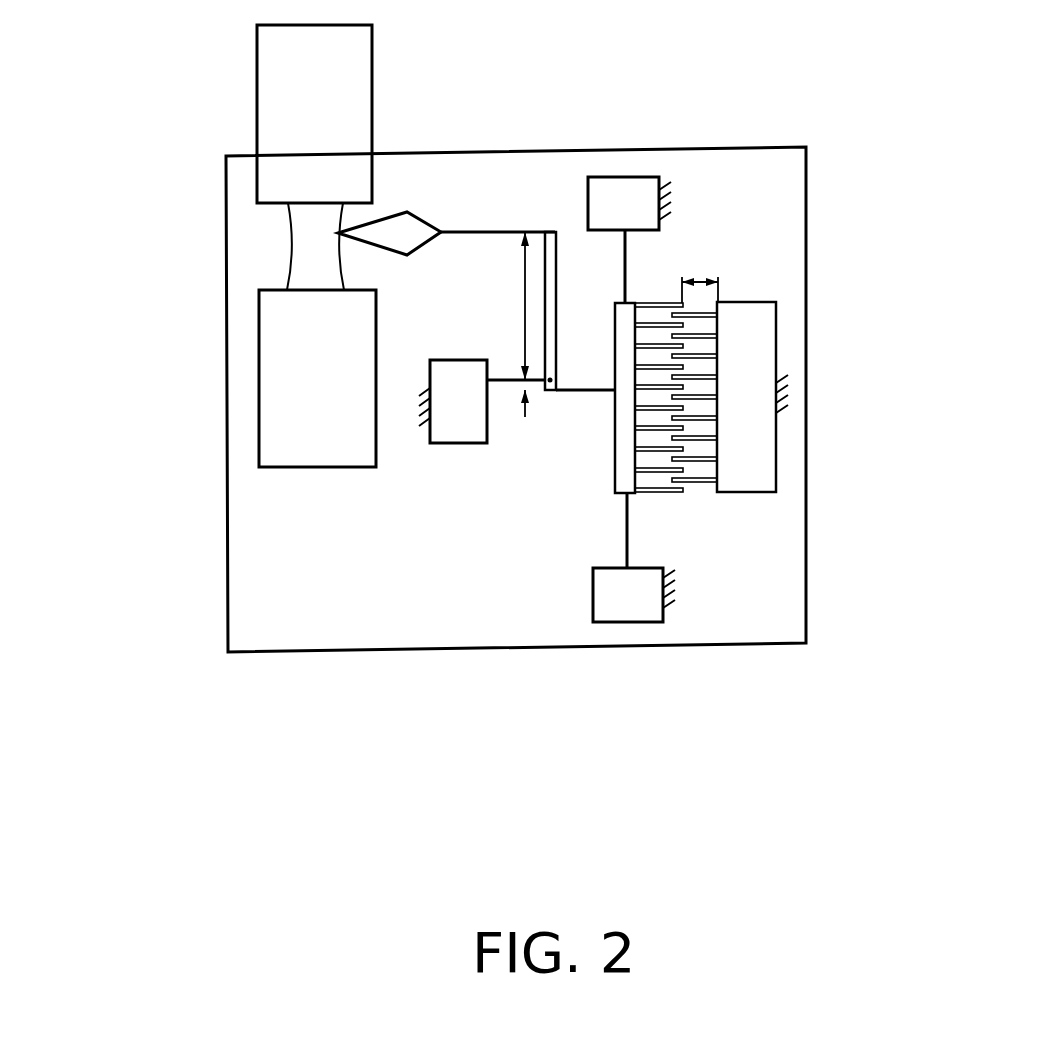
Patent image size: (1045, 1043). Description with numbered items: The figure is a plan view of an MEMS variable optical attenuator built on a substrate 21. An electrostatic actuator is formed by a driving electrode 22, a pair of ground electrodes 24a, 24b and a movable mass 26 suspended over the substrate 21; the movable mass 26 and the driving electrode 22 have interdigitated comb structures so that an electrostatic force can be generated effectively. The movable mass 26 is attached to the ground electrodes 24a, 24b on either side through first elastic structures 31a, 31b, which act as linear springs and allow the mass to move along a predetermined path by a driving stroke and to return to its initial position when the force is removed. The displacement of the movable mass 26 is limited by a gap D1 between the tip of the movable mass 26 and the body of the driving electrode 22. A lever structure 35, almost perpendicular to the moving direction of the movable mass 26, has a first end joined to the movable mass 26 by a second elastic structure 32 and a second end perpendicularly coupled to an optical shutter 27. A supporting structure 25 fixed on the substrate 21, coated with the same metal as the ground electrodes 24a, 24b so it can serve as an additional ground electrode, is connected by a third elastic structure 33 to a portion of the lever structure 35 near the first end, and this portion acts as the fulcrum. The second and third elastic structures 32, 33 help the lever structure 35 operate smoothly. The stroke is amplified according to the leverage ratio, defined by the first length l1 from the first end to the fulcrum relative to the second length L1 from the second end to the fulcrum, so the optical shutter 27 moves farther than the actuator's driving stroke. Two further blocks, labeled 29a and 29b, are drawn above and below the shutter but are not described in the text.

The substrate 21 is at (807, 578).
The driving electrode 22 is at (767, 343).
The ground electrode 24a is at (620, 190).
The ground electrode 24b is at (650, 612).
The supporting structure 25 is at (453, 443).
The movable mass 26 is at (630, 320).
The optical shutter 27 is at (417, 240).
The electrode 29a is at (353, 103).
The electrode 29b is at (273, 412).
The first elastic structure 31a is at (630, 253).
The first elastic structure 31b is at (627, 530).
The second elastic structure 32 is at (590, 393).
The third elastic structure 33 is at (515, 382).
The lever structure 35 is at (553, 318).
The gap D1 is at (700, 282).
The second length L1 is at (509, 306).
The first length l1 is at (528, 390).